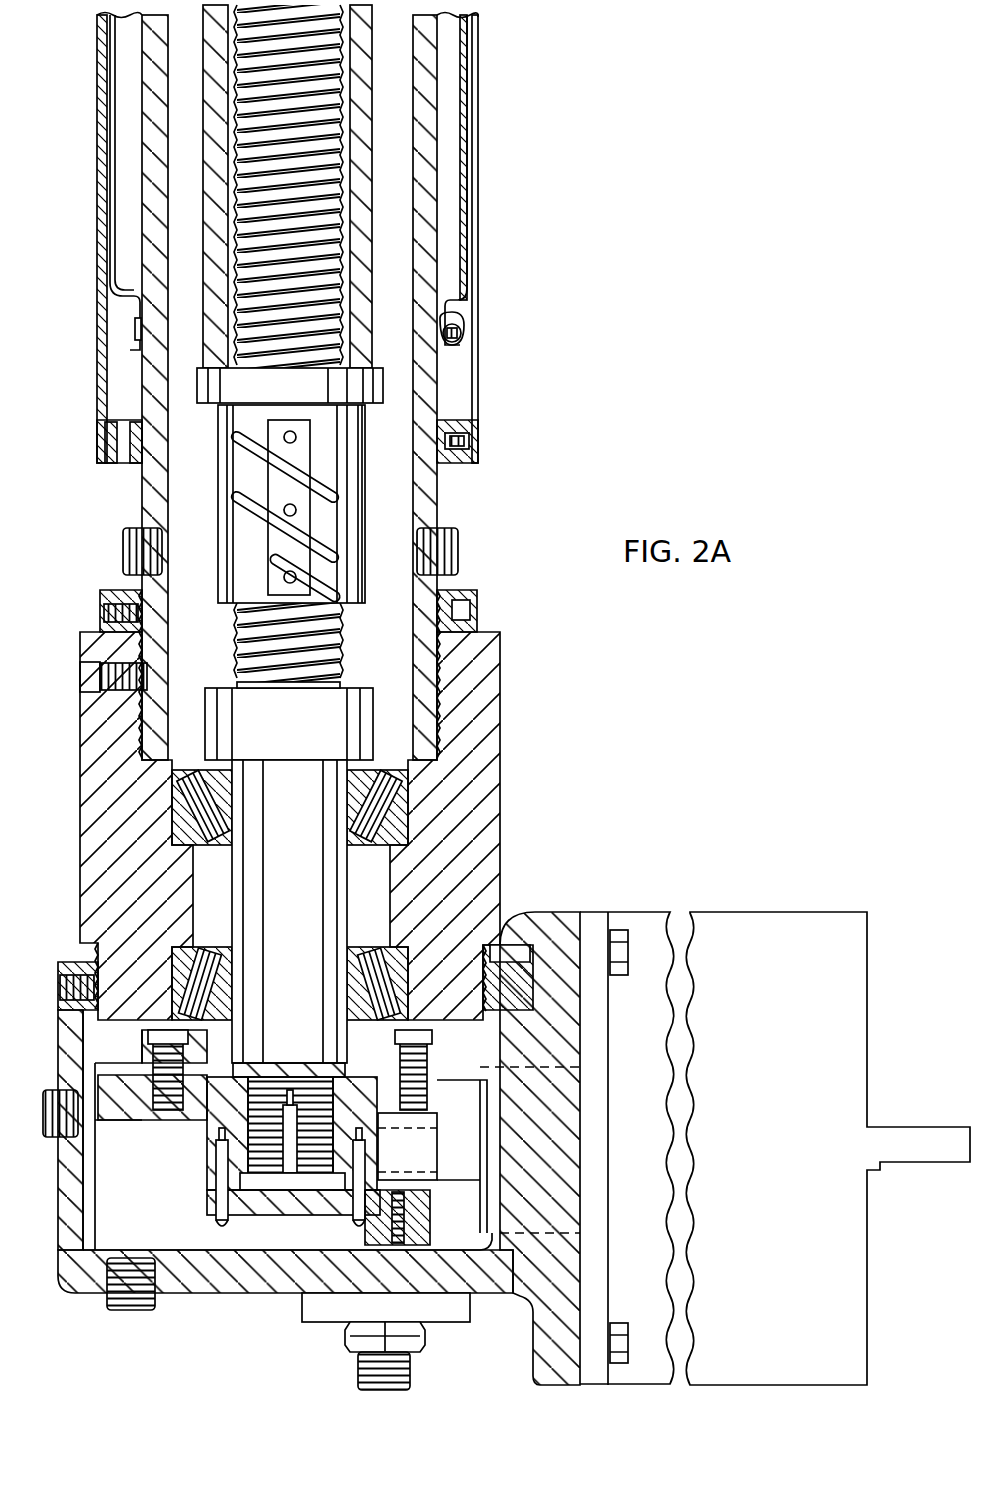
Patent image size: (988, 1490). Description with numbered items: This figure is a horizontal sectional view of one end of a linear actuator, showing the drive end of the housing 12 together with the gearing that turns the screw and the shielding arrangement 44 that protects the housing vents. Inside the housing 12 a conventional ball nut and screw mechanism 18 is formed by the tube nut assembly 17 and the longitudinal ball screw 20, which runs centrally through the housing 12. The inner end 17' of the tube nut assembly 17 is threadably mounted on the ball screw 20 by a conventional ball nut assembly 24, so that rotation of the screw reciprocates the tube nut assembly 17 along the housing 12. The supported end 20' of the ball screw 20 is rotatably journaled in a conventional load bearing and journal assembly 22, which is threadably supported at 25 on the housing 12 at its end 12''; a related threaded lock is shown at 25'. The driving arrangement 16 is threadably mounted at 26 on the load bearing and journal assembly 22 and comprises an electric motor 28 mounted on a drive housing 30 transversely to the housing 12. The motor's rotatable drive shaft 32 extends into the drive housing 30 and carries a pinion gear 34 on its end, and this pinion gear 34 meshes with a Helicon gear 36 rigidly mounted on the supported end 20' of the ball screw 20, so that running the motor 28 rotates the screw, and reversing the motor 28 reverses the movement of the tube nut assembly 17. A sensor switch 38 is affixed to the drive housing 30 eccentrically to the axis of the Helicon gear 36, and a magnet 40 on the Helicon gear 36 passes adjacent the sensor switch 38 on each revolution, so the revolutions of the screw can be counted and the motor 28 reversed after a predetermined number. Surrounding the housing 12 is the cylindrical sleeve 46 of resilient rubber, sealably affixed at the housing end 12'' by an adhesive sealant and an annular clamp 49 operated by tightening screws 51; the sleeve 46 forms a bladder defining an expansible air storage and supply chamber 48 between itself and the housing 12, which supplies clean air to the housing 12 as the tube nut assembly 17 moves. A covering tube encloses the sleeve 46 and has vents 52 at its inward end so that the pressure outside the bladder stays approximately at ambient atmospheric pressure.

The housing 12 is at (483, 423).
The end of housing 12'' is at (332, 387).
The driving arrangement 16 is at (548, 907).
The tube nut assembly 17 is at (304, 402).
The inner end of tube nut assembly 17' is at (386, 504).
The ball nut and screw mechanism 18 is at (380, 637).
The ball screw 20 is at (321, 350).
The supported end of ball screw 20' is at (289, 872).
The load bearing and journal assembly 22 is at (290, 826).
The ball nut assembly 24 is at (240, 568).
The threaded support 25 is at (336, 636).
The lock nut 25' is at (113, 677).
The threaded mounting 26 is at (98, 950).
The electric motor 28 is at (828, 1148).
The drive housing 30 is at (319, 1148).
The drive shaft 32 is at (460, 1158).
The pinion gear 34 is at (292, 1128).
The Helicon gear 36 is at (118, 1110).
The sensor switch 38 is at (358, 1372).
The magnet 40 is at (365, 1228).
The shielding arrangement 44 is at (486, 180).
The cylindrical sleeve 46 is at (112, 250).
The air storage and supply chamber 48 is at (130, 162).
The annular clamp 49 is at (135, 335).
The tightening screws 51 is at (462, 332).
The vents 52 is at (128, 463).